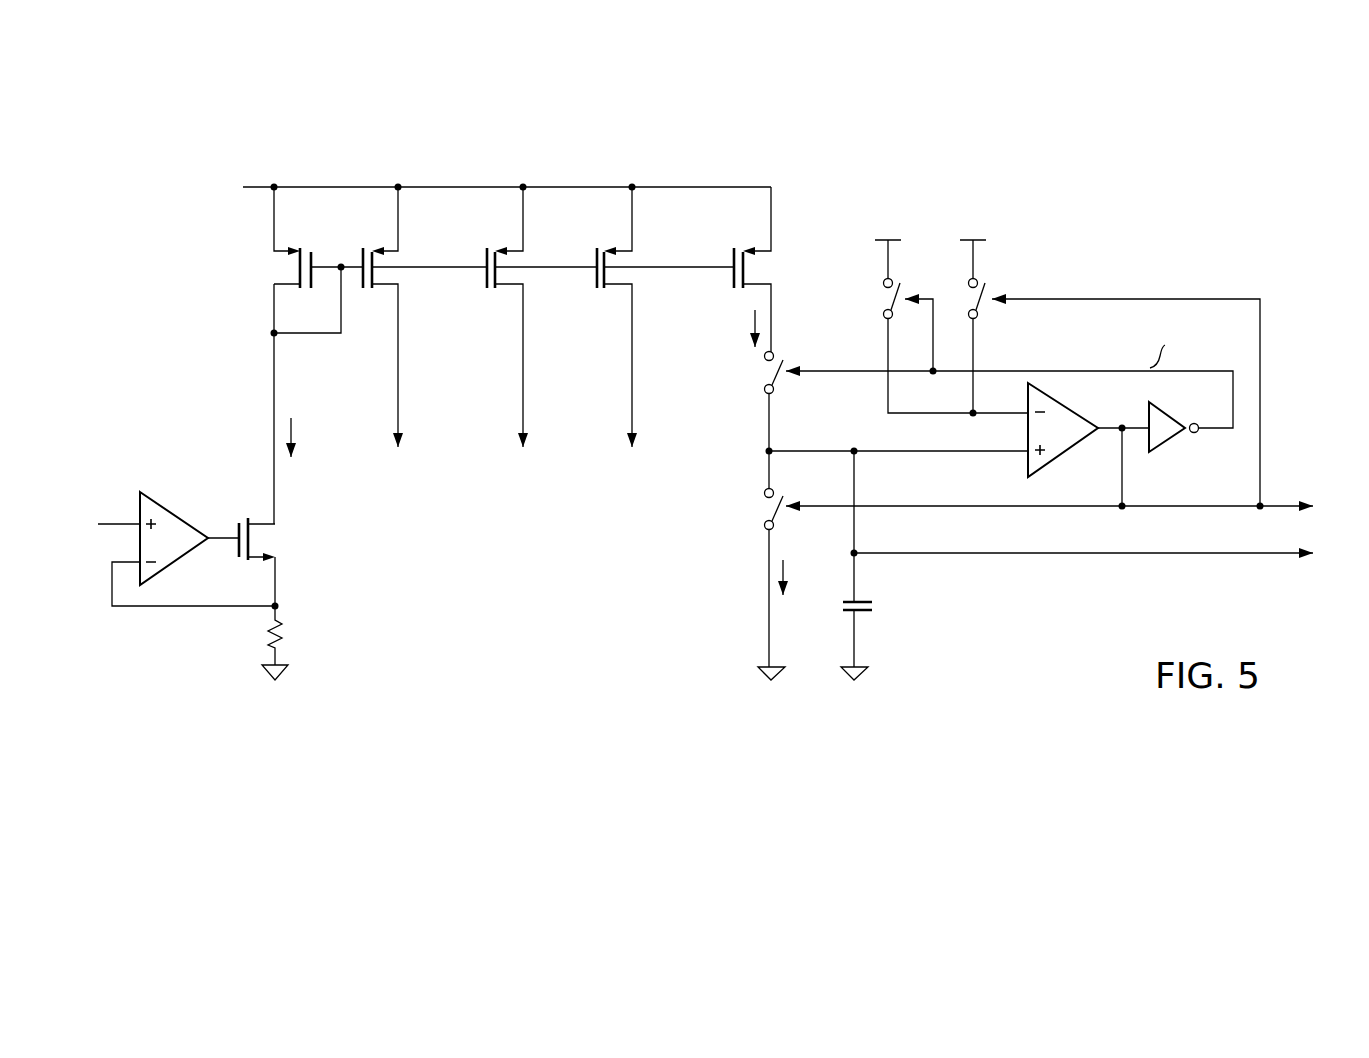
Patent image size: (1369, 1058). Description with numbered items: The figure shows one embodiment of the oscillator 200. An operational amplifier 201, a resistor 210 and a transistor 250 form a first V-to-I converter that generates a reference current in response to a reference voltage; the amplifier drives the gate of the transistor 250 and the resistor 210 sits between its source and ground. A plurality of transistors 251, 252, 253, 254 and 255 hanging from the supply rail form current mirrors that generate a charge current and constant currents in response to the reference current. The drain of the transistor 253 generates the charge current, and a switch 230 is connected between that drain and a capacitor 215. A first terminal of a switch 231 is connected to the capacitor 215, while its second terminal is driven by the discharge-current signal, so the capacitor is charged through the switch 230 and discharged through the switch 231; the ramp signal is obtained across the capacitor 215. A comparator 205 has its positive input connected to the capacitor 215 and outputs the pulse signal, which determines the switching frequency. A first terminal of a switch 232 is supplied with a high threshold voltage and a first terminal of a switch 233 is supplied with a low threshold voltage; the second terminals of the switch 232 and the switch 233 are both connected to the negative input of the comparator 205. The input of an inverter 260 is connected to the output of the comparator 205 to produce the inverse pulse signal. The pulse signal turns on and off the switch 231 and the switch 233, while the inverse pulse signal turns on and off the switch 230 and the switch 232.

The oscillator 200 is at (1205, 197).
The operational amplifier 201 is at (178, 508).
The comparator 205 is at (1068, 455).
The resistor 210 is at (293, 635).
The capacitor 215 is at (877, 605).
The switch 230 is at (758, 373).
The switch 231 is at (758, 503).
The switch 232 is at (878, 299).
The switch 233 is at (985, 315).
The transistor 250 is at (278, 540).
The transistor 251 is at (270, 267).
The transistor 252 is at (393, 273).
The transistor 253 is at (767, 268).
The transistor 254 is at (635, 273).
The transistor 255 is at (522, 273).
The inverter 260 is at (1165, 450).